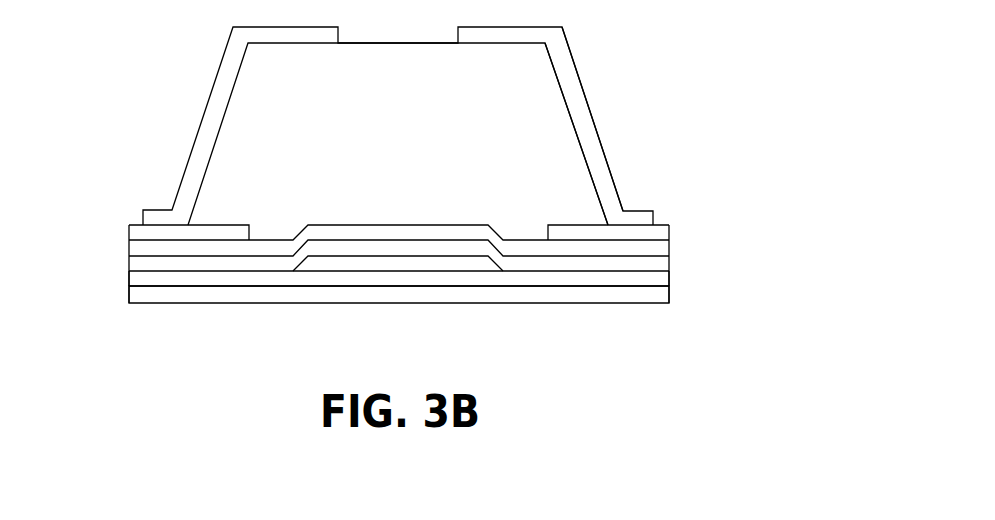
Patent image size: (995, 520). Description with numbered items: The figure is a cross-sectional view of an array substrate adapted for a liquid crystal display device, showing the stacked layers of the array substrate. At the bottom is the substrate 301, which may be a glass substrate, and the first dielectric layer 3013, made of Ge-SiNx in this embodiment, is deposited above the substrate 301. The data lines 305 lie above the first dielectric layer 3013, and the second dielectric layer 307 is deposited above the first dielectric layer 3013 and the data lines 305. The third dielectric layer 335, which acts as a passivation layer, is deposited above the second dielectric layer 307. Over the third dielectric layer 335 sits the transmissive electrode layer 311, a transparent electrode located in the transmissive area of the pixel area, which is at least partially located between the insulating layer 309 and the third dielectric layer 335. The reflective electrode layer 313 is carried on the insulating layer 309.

The substrate 301 is at (142, 293).
The first dielectric layer 3013 is at (657, 279).
The data lines 305 is at (338, 263).
The second dielectric layer 307 is at (374, 250).
The insulating layer 309 is at (248, 147).
The transmissive electrode layer 311 is at (653, 233).
The reflective electrode layer 313 is at (557, 55).
The third dielectric layer 335 is at (145, 249).